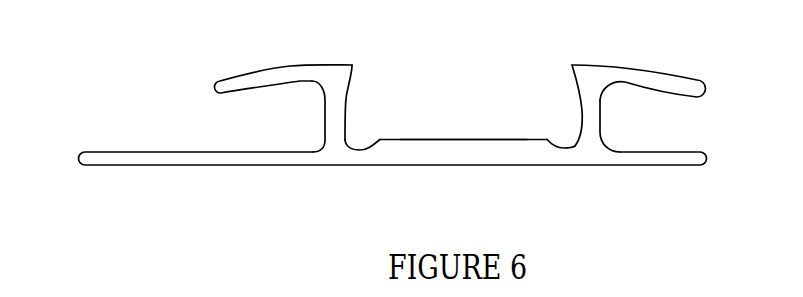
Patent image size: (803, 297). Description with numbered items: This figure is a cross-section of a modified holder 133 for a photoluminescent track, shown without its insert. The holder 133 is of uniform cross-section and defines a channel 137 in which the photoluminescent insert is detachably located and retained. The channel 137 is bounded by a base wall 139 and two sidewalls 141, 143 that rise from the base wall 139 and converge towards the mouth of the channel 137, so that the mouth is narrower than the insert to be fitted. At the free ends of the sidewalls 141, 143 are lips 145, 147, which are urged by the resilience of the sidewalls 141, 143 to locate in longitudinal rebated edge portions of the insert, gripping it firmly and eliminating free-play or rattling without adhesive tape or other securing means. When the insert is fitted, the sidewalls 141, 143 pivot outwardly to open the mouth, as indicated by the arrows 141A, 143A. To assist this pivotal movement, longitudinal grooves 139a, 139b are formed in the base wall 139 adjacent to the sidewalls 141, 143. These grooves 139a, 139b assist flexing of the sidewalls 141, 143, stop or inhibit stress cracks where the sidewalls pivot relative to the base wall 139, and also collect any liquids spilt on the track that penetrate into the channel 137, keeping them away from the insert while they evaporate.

The holder 133 is at (117, 182).
The channel 137 is at (455, 88).
The base wall 139 is at (465, 165).
The longitudinal groove 139a is at (366, 150).
The longitudinal groove 139b is at (567, 147).
The sidewall 141 is at (327, 113).
The arrow 141A is at (157, 87).
The sidewall 143 is at (593, 115).
The arrow 143A is at (748, 93).
The lip 145 is at (352, 65).
The lip 147 is at (572, 65).